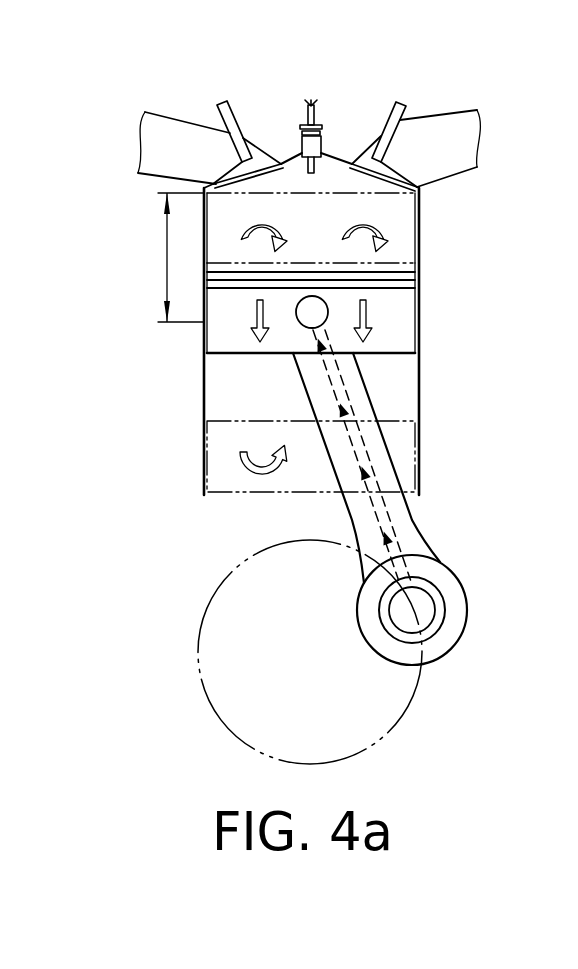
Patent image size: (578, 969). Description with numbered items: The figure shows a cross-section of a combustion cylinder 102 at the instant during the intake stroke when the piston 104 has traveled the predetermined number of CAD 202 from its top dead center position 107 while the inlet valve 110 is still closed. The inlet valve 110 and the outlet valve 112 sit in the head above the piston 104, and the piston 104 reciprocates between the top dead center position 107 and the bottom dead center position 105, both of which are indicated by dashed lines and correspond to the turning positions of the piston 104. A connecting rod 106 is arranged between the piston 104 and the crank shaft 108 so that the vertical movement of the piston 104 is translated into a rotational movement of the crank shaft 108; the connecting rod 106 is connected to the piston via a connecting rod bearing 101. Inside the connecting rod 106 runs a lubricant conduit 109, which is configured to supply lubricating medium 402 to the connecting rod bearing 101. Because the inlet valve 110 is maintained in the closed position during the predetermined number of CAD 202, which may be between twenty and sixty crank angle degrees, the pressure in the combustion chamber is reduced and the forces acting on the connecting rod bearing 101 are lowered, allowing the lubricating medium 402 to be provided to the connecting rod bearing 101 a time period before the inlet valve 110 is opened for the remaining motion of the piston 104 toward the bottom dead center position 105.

The connecting rod bearing 101 is at (312, 313).
The combustion cylinder 102 is at (204, 403).
The piston 104 is at (419, 316).
The bottom dead center position 105 is at (419, 478).
The connecting rod 106 is at (412, 532).
The top dead center position 107 is at (419, 252).
The crank shaft 108 is at (403, 713).
The lubricant conduit 109 is at (358, 453).
The inlet valve 110 is at (198, 105).
The outlet valve 112 is at (428, 103).
The predetermined number of CAD 202 is at (161, 257).
The lubricating medium 402 is at (356, 362).